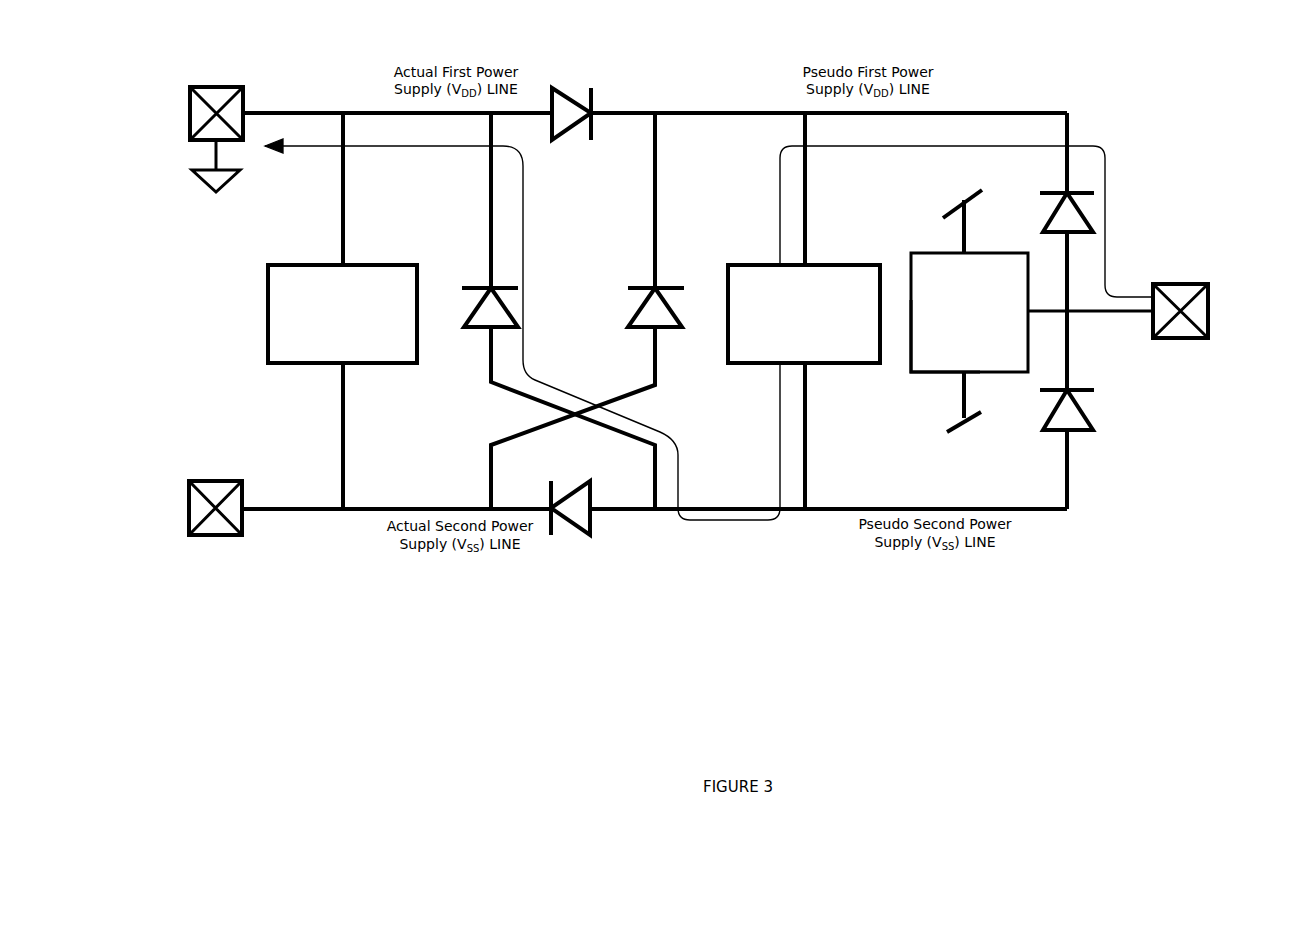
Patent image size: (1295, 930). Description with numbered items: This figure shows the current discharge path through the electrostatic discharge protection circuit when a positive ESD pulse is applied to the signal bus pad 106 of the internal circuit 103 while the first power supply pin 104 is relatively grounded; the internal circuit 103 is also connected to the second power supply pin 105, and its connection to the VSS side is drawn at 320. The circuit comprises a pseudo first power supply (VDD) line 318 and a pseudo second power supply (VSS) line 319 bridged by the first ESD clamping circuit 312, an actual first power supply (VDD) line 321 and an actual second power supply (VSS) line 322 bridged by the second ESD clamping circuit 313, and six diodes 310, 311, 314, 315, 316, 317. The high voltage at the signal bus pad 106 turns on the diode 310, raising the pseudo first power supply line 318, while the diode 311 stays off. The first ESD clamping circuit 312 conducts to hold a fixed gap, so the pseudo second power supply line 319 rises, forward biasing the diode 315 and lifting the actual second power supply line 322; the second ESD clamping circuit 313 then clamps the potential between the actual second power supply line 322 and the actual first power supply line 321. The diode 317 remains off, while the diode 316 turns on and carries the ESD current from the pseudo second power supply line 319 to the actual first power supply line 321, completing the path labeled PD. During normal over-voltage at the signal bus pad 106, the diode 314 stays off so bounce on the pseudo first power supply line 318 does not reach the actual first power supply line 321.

The internal circuit 103 is at (969, 312).
The first power supply pin 104 is at (221, 87).
The second power supply pin 105 is at (215, 536).
The signal bus pad 106 is at (1203, 340).
The diode 310 is at (1043, 232).
The diode 311 is at (1043, 425).
The first ESD clamping circuit 312 is at (850, 265).
The second ESD clamping circuit 313 is at (356, 265).
The diode 314 is at (561, 92).
The diode 315 is at (590, 530).
The diode 316 is at (481, 330).
The diode 317 is at (628, 326).
The pseudo first power supply (VDD) line 318 is at (1026, 113).
The pseudo second power supply (VSS) line 319 is at (1038, 508).
The internal circuit connection 320 is at (928, 374).
The actual first power supply (VDD) line 321 is at (320, 113).
The actual second power supply (VSS) line 322 is at (312, 512).